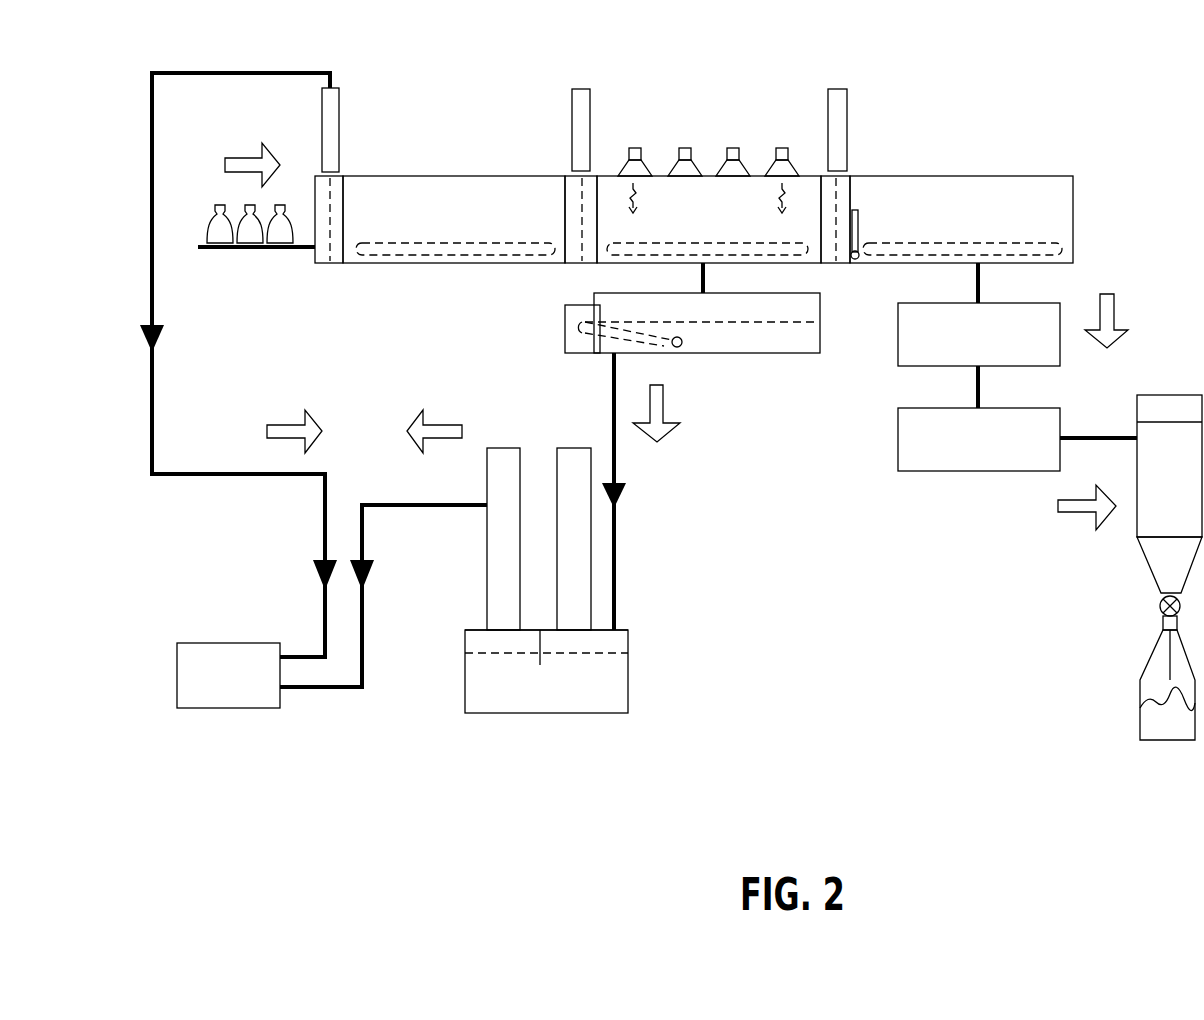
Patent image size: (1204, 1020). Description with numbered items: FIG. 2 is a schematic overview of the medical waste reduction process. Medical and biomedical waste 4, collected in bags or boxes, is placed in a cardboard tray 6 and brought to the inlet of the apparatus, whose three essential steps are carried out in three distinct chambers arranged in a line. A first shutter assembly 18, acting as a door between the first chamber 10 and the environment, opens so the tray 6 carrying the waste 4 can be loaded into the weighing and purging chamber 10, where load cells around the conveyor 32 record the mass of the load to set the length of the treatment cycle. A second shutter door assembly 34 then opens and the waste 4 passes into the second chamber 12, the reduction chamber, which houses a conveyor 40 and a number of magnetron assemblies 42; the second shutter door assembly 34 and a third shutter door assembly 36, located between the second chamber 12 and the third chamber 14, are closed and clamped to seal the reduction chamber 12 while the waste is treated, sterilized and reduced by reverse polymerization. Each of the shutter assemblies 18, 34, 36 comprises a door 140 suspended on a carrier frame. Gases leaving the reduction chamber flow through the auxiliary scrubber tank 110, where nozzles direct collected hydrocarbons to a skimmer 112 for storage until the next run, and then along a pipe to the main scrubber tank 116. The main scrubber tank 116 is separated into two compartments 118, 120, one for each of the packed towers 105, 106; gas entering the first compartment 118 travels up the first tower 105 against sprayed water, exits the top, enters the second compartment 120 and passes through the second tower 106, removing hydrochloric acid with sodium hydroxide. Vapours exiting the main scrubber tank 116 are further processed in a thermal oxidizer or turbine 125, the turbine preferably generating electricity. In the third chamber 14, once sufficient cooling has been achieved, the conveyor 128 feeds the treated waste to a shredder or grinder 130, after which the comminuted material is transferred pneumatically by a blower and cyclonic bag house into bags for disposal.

The medical and biomedical waste 4 is at (212, 228).
The cardboard tray 6 is at (250, 250).
The first chamber 10 is at (464, 222).
The second chamber 12 is at (722, 219).
The third chamber 14 is at (975, 219).
The first shutter assembly 18 is at (344, 178).
The conveyor 32 is at (435, 258).
The second shutter door assembly 34 is at (594, 183).
The third shutter door assembly 36 is at (851, 180).
The conveyor 40 is at (632, 257).
The magnetron assemblies 42 is at (688, 148).
The first packed tower 105 is at (497, 553).
The second packed tower 106 is at (585, 540).
The auxiliary scrubber tank 110 is at (783, 307).
The skimmer 112 is at (607, 340).
The main scrubber tank 116 is at (601, 700).
The first compartment 118 is at (470, 638).
The second compartment 120 is at (622, 640).
The thermal oxidizer or turbine 125 is at (248, 688).
The conveyor 128 is at (915, 257).
The shredder or grinder 130 is at (1002, 348).
The door 140 is at (340, 106).